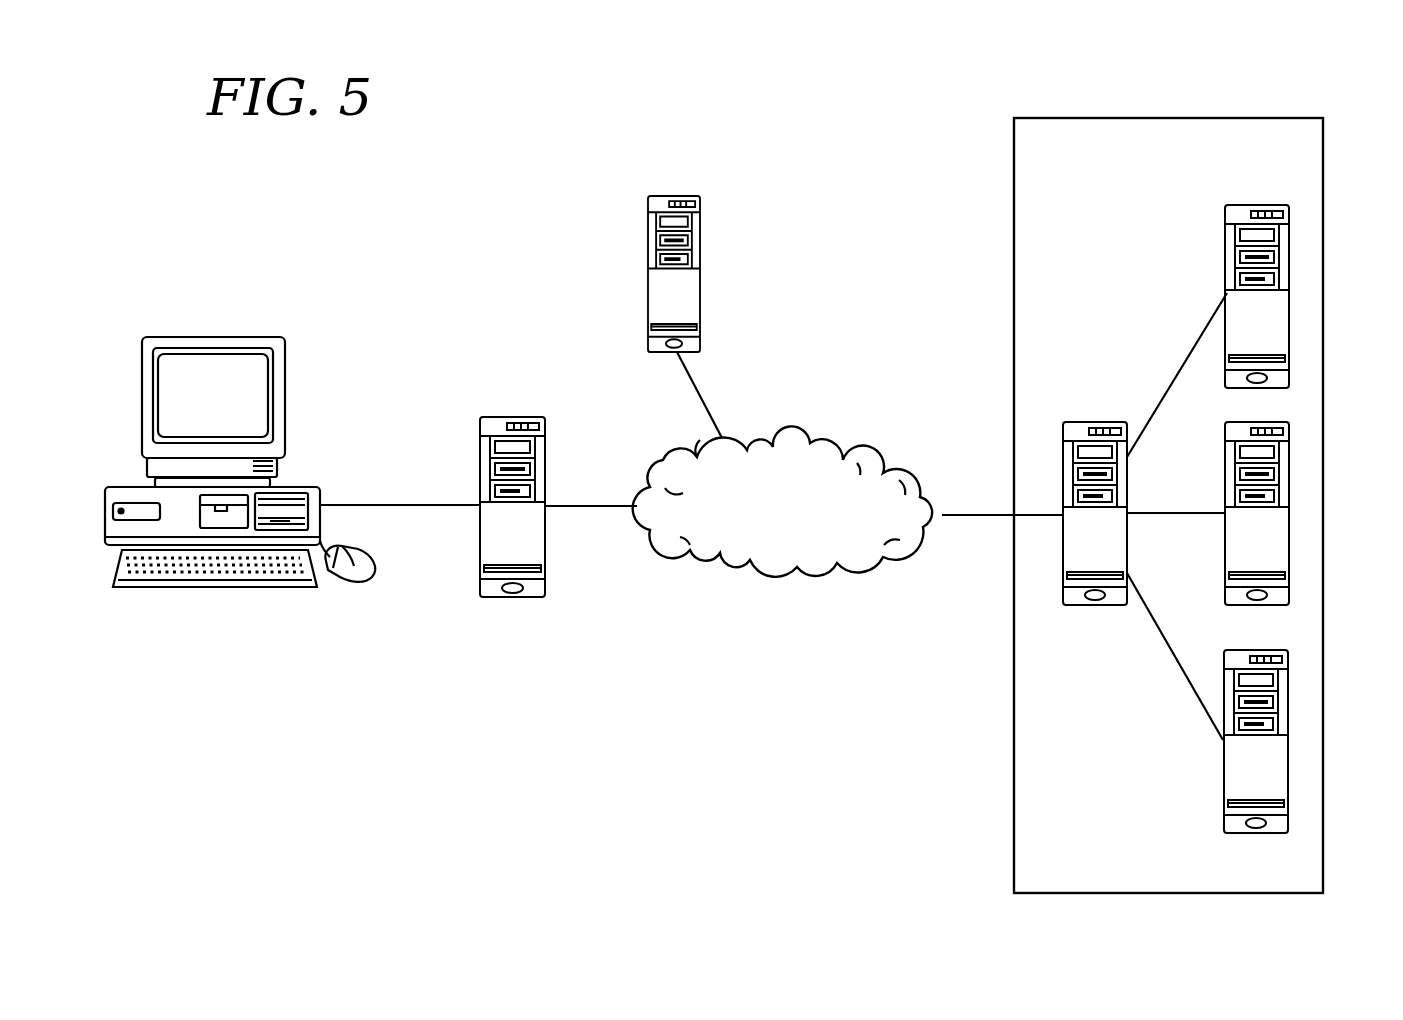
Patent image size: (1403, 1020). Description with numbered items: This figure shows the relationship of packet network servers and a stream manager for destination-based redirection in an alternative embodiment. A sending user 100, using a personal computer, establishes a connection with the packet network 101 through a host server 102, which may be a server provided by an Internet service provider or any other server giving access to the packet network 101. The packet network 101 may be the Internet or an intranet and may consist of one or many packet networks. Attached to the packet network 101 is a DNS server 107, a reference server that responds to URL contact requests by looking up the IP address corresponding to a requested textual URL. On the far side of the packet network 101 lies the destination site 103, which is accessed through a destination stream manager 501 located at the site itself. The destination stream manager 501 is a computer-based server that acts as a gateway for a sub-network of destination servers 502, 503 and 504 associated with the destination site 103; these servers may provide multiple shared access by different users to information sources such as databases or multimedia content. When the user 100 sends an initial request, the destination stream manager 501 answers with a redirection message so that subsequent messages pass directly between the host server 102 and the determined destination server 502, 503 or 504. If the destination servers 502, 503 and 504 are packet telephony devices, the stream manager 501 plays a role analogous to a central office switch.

The sending user 100 is at (213, 339).
The packet network 101 is at (782, 576).
The host server 102 is at (498, 415).
The destination site 103 is at (1257, 118).
The DNS server 107 is at (680, 195).
The destination stream manager 501 is at (1090, 420).
The destination server 502 is at (1289, 317).
The destination server 503 is at (1280, 532).
The destination server 504 is at (1277, 752).